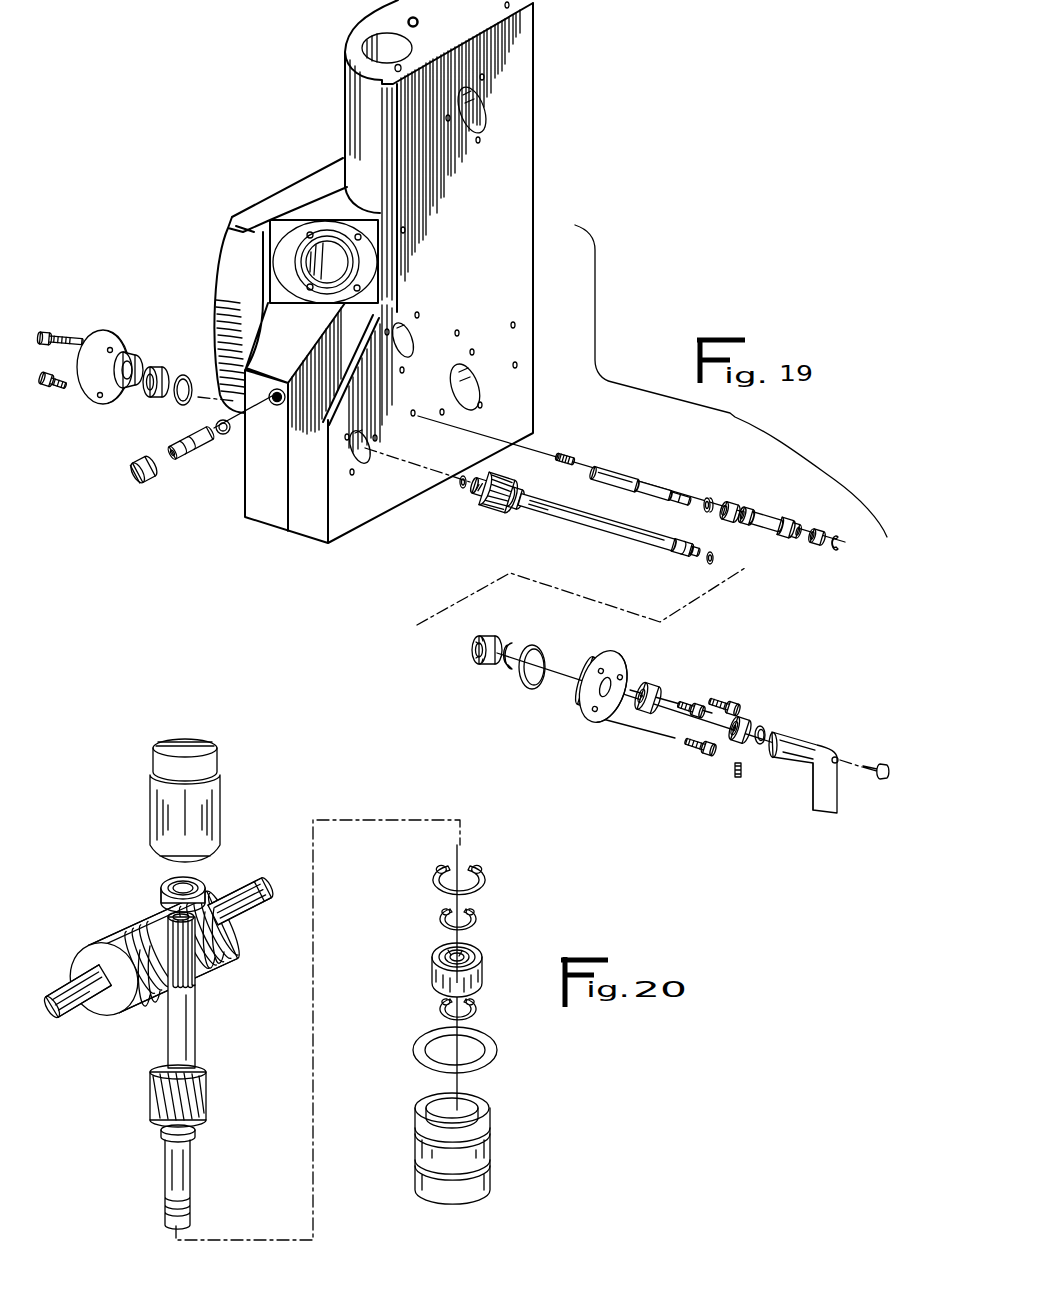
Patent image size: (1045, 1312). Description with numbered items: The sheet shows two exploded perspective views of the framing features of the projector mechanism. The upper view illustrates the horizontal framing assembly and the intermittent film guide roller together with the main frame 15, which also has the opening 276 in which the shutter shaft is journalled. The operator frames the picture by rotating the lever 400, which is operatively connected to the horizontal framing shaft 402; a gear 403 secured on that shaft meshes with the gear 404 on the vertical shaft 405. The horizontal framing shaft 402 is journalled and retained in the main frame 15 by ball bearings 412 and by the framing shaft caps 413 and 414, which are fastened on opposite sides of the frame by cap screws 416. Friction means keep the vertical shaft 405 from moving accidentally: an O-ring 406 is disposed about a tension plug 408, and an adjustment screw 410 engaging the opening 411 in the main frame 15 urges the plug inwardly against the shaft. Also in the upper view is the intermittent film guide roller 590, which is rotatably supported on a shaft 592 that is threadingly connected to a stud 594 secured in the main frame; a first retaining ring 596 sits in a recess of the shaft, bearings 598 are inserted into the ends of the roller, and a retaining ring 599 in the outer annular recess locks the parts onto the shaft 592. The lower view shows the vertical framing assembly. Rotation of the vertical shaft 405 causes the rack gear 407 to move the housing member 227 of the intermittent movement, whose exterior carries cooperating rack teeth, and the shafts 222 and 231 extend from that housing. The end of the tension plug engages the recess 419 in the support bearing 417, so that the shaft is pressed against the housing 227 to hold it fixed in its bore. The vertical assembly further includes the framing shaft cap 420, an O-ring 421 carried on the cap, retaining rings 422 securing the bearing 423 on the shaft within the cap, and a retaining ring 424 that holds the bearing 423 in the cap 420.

In FIG. 19, the main frame 15 is at (402, 271).
In FIG. 19, the opening 276 is at (302, 223).
In FIG. 19, the cap screws 416 is at (389, 533).
In FIG. 19, the framing shaft cap 413 is at (131, 352).
In FIG. 19, the ball bearings 412 is at (322, 514).
In FIG. 19, the O-ring 406 is at (212, 447).
In FIG. 19, the opening 411 is at (277, 432).
In FIG. 19, the tension plug 408 is at (190, 464).
In FIG. 19, the adjustment screw 410 is at (147, 493).
In FIG. 19, the stud 594 is at (582, 437).
In FIG. 19, the shaft 592 is at (640, 469).
In FIG. 19, the first retaining ring 596 is at (738, 480).
In FIG. 19, the bearings 598 is at (767, 498).
In FIG. 19, the intermittent film guide roller 590 is at (799, 520).
In FIG. 19, the retaining ring 599 is at (864, 563).
In FIG. 19, the gear 403 is at (479, 501).
In FIG. 19, the horizontal framing shaft 402 is at (615, 528).
In FIG. 19, the framing shaft cap 414 is at (587, 697).
In FIG. 19, the lever 400 is at (788, 773).
In FIG. 20, the recess 419 is at (148, 760).
In FIG. 20, the support bearing 417 is at (149, 818).
In FIG. 20, the rack gear 407 is at (152, 951).
In FIG. 20, the shaft 222 is at (253, 921).
In FIG. 20, the housing member 227 is at (205, 957).
In FIG. 20, the vertical shaft 405 is at (145, 990).
In FIG. 20, the shaft 231 is at (77, 1021).
In FIG. 20, the gear 404 is at (145, 1147).
In FIG. 20, the retaining ring 424 is at (498, 875).
In FIG. 20, the retaining rings 422 is at (498, 957).
In FIG. 20, the bearing 423 is at (486, 965).
In FIG. 20, the O-ring 421 is at (485, 1050).
In FIG. 20, the framing shaft cap 420 is at (491, 1148).